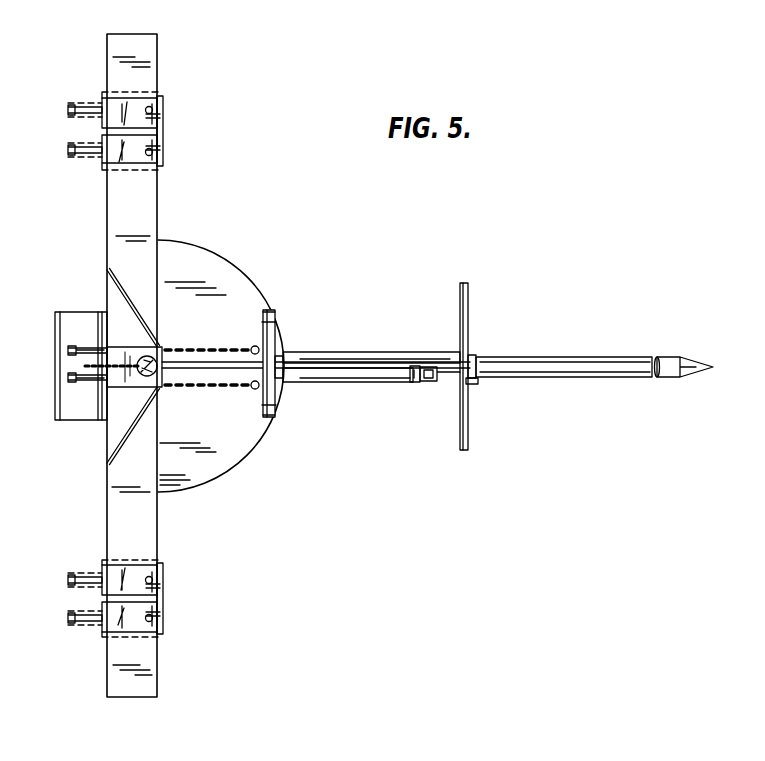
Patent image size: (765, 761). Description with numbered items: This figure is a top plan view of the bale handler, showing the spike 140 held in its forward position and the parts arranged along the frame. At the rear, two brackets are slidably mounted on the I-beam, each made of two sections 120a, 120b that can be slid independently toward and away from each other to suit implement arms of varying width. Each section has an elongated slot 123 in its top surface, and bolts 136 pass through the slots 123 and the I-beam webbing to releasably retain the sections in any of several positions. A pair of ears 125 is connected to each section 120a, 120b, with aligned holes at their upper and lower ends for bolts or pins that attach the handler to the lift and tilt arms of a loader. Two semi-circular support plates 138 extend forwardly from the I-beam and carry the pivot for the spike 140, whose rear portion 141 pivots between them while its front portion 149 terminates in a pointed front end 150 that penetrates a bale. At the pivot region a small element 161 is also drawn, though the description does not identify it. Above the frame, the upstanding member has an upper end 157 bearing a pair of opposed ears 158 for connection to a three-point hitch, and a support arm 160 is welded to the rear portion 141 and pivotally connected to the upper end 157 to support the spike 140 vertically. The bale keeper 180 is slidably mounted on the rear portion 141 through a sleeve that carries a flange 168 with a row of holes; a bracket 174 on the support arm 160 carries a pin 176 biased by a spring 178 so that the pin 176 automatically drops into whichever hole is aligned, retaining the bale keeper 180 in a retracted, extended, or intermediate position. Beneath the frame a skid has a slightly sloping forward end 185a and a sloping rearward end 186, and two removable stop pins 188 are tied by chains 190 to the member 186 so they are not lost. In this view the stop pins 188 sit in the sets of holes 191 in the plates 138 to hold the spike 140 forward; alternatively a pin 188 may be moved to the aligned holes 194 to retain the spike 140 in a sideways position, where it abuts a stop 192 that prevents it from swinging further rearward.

The bracket section 120a is at (127, 101).
The bracket section 120b is at (108, 166).
The elongated slot 123 is at (157, 118).
The ears 125 is at (86, 146).
The bolts 136 is at (156, 108).
The semi-circular support plates 138 is at (218, 282).
The spike 140 is at (606, 350).
The rear portion of spike 141 is at (280, 353).
The front portion of spike 149 is at (550, 357).
The pointed front end 150 is at (705, 335).
The upper end of upstanding member 157 is at (135, 384).
The ears 158 is at (80, 346).
The support arm 160 is at (366, 379).
The pivot pin 161 is at (153, 353).
The flange 168 is at (389, 358).
The bracket 174 is at (414, 383).
The pin 176 is at (432, 383).
The spring 178 is at (467, 394).
The bale keeper 180 is at (467, 308).
The forward end of skid 185a is at (277, 330).
The rearward end of skid 186 is at (80, 410).
The stop pins 188 is at (253, 346).
The chains 190 is at (200, 347).
The holes 191 is at (266, 308).
The stop 192 is at (161, 96).
The aligned holes 194 is at (179, 258).